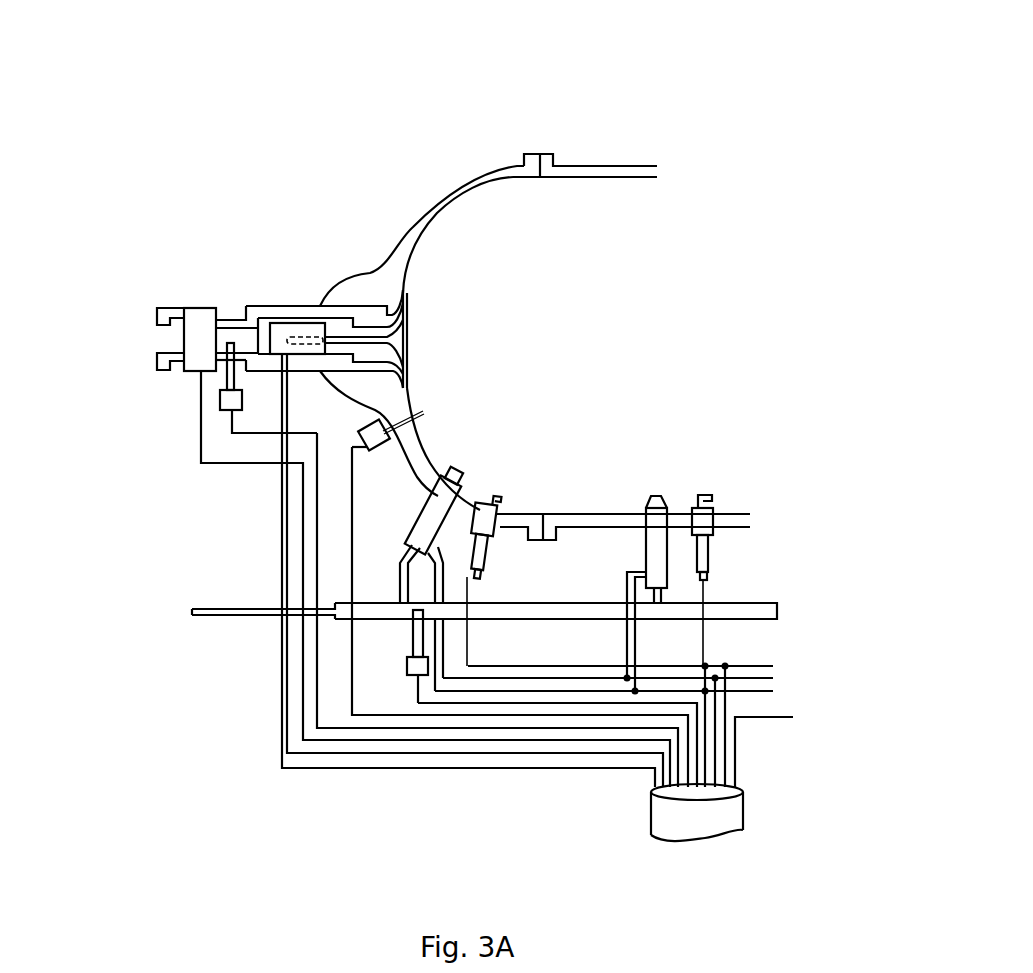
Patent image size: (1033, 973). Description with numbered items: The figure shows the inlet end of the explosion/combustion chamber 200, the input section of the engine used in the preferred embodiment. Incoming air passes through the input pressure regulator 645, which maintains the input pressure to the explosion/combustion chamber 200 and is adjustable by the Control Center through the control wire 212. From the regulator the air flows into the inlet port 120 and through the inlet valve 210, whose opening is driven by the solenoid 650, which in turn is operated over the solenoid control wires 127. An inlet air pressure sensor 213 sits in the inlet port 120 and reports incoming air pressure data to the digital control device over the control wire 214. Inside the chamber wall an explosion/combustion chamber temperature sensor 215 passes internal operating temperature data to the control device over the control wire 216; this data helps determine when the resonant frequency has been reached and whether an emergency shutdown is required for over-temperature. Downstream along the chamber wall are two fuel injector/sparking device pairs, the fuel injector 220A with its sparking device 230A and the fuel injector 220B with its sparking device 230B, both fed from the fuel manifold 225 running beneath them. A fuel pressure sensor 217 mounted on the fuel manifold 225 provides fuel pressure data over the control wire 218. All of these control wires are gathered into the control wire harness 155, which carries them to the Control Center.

The explosion/combustion chamber 200 is at (703, 53).
The inlet valve 210 is at (367, 334).
The inlet port 120 is at (290, 312).
The solenoid 650 is at (280, 330).
The input pressure regulator 645 is at (193, 315).
The control wire 212 is at (200, 386).
The inlet air pressure sensor 213 is at (222, 408).
The solenoid control wires 127 is at (280, 448).
The explosion/combustion chamber temperature sensor 215 is at (367, 443).
The fuel injector 220A is at (450, 488).
The sparking device 230A is at (490, 513).
The fuel injector 220B is at (655, 517).
The sparking device 230B is at (705, 517).
The fuel manifold 225 is at (757, 608).
The control wire 214 is at (317, 657).
The control wire 216 is at (352, 686).
The fuel pressure sensor 217 is at (410, 672).
The control wire 218 is at (460, 703).
The control wire harness 155 is at (718, 818).